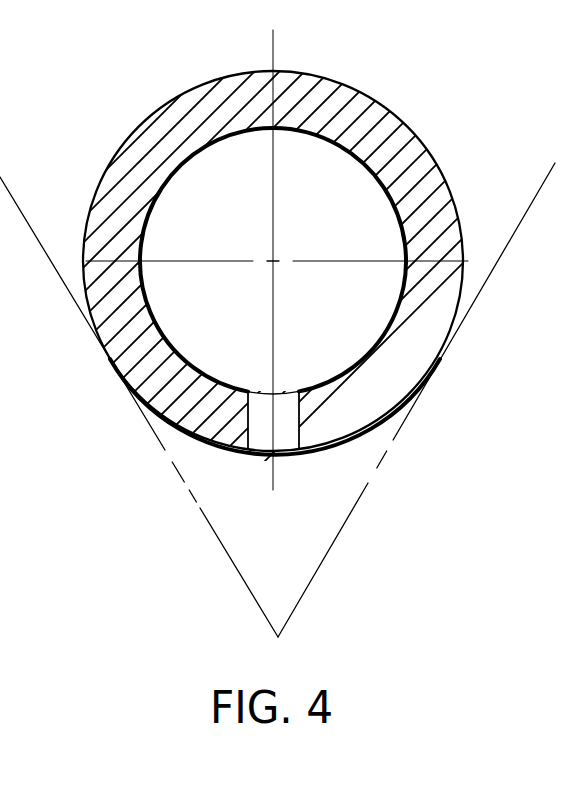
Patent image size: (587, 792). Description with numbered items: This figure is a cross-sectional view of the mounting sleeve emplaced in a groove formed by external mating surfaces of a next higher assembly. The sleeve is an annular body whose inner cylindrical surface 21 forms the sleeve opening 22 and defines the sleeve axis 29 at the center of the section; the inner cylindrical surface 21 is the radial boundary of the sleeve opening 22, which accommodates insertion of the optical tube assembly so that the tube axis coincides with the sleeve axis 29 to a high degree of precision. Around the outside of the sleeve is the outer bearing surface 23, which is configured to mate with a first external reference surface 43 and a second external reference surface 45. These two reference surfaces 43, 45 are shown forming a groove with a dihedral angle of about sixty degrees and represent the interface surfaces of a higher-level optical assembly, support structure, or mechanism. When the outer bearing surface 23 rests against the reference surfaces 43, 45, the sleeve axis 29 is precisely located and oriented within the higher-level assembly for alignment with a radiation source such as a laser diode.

The inner cylindrical surface 21 is at (155, 197).
The sleeve opening 22 is at (363, 322).
The outer bearing surface 23 is at (198, 85).
The sleeve axis 29 is at (277, 262).
The first external reference surface 43 is at (247, 588).
The second external reference surface 45 is at (313, 573).